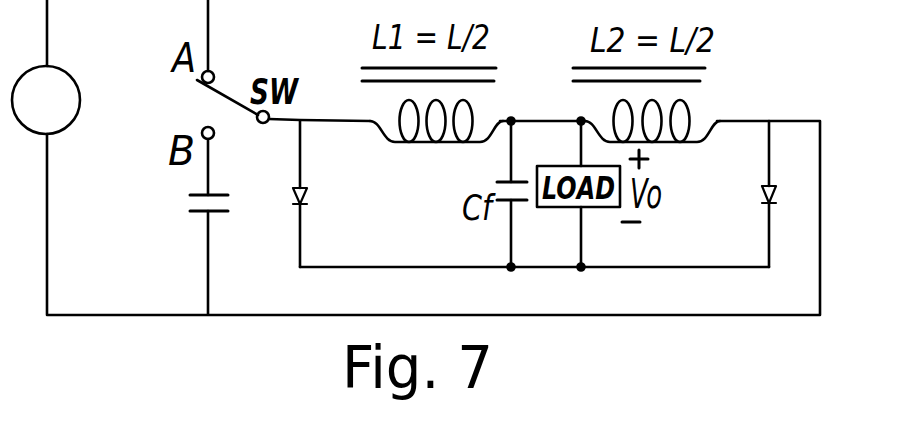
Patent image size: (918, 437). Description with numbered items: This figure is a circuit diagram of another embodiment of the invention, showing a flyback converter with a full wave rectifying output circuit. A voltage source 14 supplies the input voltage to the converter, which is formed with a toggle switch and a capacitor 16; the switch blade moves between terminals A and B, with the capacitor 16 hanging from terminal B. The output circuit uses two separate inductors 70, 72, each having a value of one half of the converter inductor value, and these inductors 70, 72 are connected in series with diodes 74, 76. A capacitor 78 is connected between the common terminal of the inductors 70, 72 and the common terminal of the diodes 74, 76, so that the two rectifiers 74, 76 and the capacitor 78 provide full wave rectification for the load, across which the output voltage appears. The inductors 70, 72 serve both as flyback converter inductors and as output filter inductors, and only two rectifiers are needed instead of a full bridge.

The voltage source 14 is at (60, 72).
The capacitor 16 is at (200, 212).
The inductor 70 is at (366, 82).
The inductor 72 is at (702, 80).
The diode 74 is at (312, 192).
The diode 76 is at (763, 197).
The capacitor 78 is at (518, 200).